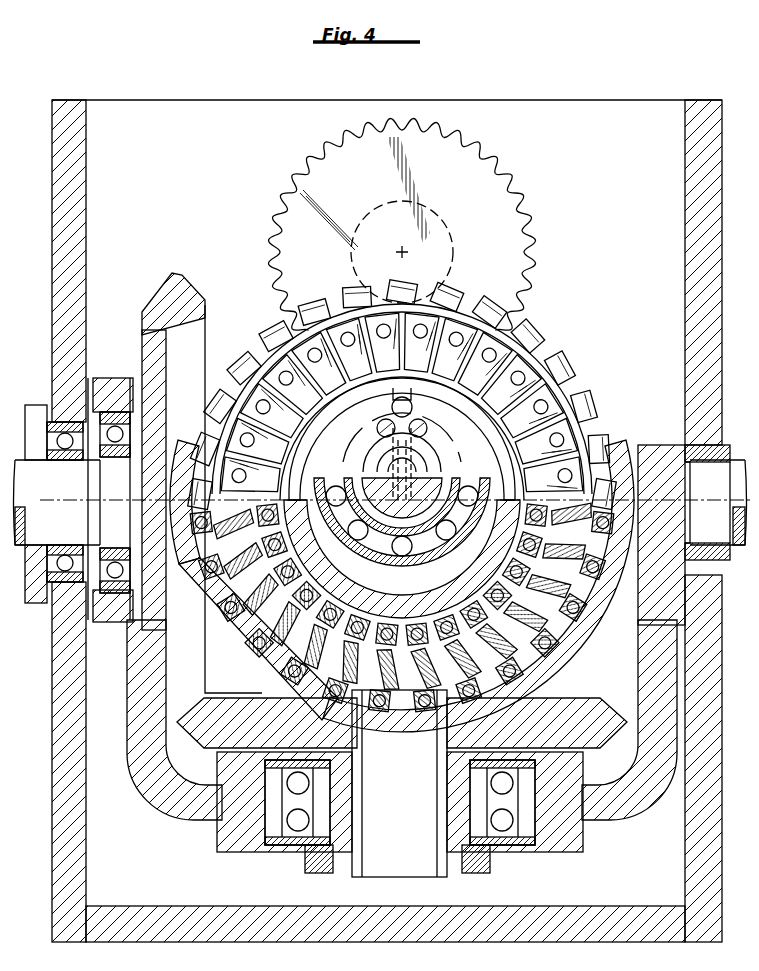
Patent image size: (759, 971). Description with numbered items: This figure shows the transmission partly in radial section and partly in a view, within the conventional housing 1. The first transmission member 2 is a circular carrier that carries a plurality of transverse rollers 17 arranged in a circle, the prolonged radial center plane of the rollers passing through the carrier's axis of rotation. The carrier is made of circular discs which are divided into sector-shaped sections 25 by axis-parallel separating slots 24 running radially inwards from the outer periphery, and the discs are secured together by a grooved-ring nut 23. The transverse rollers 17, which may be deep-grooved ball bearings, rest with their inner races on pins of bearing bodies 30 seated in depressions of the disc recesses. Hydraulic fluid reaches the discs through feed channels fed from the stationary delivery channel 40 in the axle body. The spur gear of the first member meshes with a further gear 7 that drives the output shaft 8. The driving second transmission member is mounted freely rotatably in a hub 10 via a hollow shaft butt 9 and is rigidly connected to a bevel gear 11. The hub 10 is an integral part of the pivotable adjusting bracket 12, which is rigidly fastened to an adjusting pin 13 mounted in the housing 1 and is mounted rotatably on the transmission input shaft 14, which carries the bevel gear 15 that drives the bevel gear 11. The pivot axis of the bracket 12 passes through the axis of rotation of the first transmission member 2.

The housing 1 is at (190, 906).
The first transmission member 2 is at (405, 487).
The gear 7 is at (470, 177).
The output shaft 8 is at (445, 239).
The hollow shaft butt 9 is at (355, 788).
The hub 10 is at (565, 835).
The bevel gear 11 is at (560, 706).
The adjusting bracket 12 is at (645, 790).
The adjusting pin 13 is at (702, 462).
The transmission input shaft 14 is at (42, 478).
The bevel gear 15 is at (168, 295).
The transverse rollers 17 is at (236, 360).
The grooved-ring nut 23 is at (368, 428).
The separating slots 24 is at (402, 548).
The sector-shaped sections 25 is at (512, 325).
The bearing bodies 30 is at (572, 626).
The delivery channel 40 is at (420, 470).